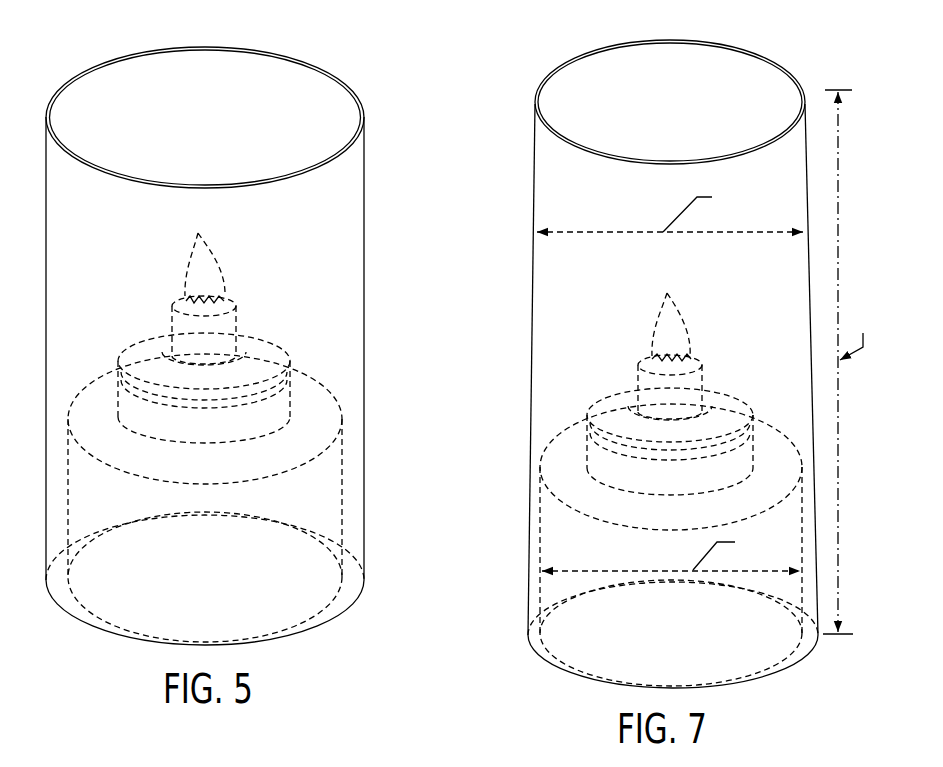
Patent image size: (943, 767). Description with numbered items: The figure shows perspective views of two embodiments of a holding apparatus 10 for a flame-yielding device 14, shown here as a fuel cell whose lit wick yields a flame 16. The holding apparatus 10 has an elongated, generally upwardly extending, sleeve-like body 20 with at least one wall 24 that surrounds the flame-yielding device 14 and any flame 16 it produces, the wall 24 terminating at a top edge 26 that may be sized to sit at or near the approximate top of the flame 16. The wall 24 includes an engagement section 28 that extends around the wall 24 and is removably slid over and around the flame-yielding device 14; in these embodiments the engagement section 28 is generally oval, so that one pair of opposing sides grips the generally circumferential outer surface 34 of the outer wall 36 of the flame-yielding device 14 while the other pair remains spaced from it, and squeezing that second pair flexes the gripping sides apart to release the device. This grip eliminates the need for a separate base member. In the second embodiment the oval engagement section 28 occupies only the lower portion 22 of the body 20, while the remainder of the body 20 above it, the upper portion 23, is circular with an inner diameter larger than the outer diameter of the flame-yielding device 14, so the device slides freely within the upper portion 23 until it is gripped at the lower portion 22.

In FIG. 5, the holding apparatus 10 is at (393, 90).
In FIG. 7, the holding apparatus 10 is at (508, 80).
In FIG. 5, the flame-yielding device 14 is at (343, 497).
In FIG. 7, the flame-yielding device 14 is at (536, 513).
In FIG. 5, the flame 16 is at (218, 262).
In FIG. 7, the flame 16 is at (685, 315).
In FIG. 5, the body 20 is at (366, 203).
In FIG. 7, the body 20 is at (533, 212).
In FIG. 7, the lower portion 22 is at (493, 502).
In FIG. 7, the upper portion 23 is at (480, 312).
In FIG. 5, the wall 24 is at (366, 279).
In FIG. 7, the wall 24 is at (535, 270).
In FIG. 5, the top edge 26 is at (233, 47).
In FIG. 7, the top edge 26 is at (610, 47).
In FIG. 7, the engagement section 28 is at (517, 545).
In FIG. 7, the outer surface 34 is at (540, 607).
In FIG. 5, the outer wall 36 is at (343, 437).